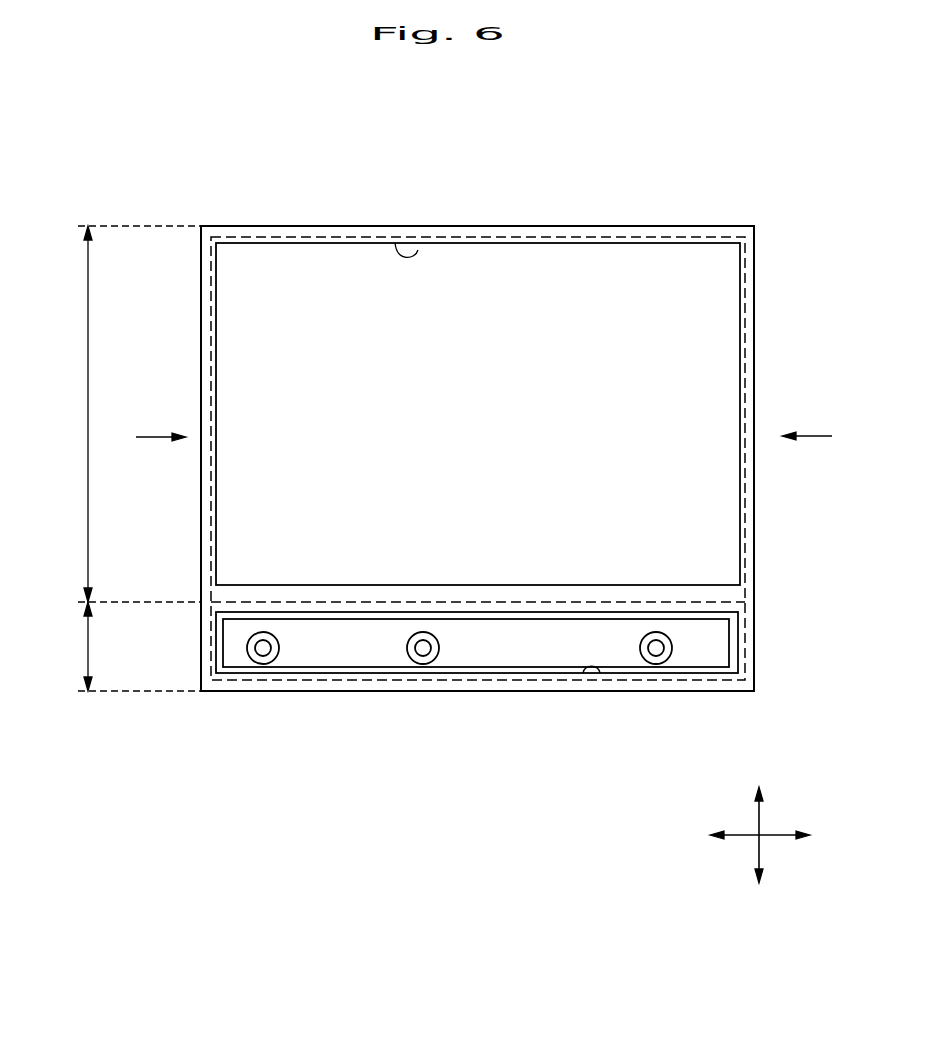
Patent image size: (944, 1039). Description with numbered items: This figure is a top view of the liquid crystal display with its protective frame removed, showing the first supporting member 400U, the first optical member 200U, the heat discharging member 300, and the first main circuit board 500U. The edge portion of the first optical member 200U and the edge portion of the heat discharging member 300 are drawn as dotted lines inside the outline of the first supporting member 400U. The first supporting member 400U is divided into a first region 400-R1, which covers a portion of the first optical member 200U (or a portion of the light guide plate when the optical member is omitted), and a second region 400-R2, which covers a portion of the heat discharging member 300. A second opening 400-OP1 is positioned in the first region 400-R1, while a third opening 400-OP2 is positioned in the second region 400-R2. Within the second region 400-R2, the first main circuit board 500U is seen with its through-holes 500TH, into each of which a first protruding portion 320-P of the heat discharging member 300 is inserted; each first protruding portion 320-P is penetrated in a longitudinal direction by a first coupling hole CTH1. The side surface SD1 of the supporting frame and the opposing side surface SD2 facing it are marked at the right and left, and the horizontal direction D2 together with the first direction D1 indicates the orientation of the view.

The second opening 400-OP1 is at (418, 250).
The first supporting member 400U is at (603, 226).
The first optical member 200U is at (697, 237).
The first region 400-R1 is at (105, 414).
The second region 400-R2 is at (102, 646).
The opposing side surface SD2 is at (141, 436).
The side surface SD1 is at (826, 437).
The first protruding portion 320-P is at (253, 654).
The first coupling hole CTH1 is at (263, 648).
The through-hole 500TH is at (274, 659).
The heat discharging member 300 is at (417, 680).
The first main circuit board 500U is at (508, 667).
The third opening 400-OP2 is at (600, 673).
The first direction D1 is at (757, 847).
The horizontal direction D2 is at (773, 835).